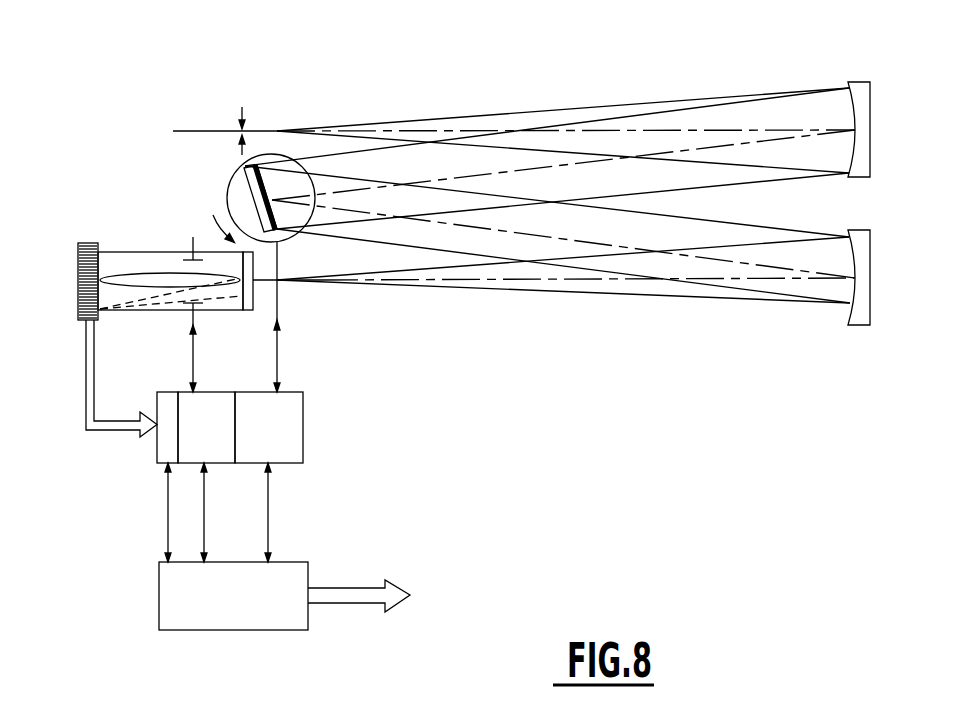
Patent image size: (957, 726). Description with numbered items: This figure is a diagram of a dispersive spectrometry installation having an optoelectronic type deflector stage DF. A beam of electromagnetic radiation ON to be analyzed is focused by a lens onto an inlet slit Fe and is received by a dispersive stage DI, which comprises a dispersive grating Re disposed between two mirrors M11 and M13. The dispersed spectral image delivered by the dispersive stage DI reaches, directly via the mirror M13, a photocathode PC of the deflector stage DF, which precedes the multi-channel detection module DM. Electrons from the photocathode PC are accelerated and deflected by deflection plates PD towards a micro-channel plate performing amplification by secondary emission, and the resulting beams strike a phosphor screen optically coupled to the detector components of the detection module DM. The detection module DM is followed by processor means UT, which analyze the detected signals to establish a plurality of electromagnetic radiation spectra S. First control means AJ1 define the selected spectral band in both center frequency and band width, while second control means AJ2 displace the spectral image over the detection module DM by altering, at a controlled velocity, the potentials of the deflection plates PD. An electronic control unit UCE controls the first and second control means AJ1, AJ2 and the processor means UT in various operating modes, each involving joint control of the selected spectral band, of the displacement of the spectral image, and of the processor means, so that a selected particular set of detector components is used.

The beam of electromagnetic radiation ON is at (192, 131).
The inlet slit Fe is at (246, 110).
The dispersive grating Re is at (244, 167).
The dispersive stage DI is at (228, 187).
The mirror M11 is at (862, 56).
The mirror M13 is at (858, 325).
The multi-channel detection module DM is at (78, 268).
The optoelectronic type deflector stage DF is at (140, 310).
The photocathode PC is at (248, 310).
The deflection plates PD is at (192, 243).
The processor means UT is at (170, 448).
The second control means AJ2 is at (223, 452).
The first control means AJ1 is at (293, 442).
The electronic control unit UCE is at (202, 630).
The electromagnetic radiation spectra S is at (404, 593).